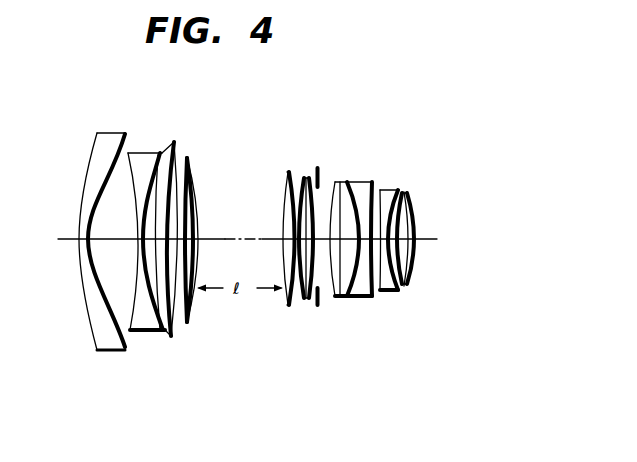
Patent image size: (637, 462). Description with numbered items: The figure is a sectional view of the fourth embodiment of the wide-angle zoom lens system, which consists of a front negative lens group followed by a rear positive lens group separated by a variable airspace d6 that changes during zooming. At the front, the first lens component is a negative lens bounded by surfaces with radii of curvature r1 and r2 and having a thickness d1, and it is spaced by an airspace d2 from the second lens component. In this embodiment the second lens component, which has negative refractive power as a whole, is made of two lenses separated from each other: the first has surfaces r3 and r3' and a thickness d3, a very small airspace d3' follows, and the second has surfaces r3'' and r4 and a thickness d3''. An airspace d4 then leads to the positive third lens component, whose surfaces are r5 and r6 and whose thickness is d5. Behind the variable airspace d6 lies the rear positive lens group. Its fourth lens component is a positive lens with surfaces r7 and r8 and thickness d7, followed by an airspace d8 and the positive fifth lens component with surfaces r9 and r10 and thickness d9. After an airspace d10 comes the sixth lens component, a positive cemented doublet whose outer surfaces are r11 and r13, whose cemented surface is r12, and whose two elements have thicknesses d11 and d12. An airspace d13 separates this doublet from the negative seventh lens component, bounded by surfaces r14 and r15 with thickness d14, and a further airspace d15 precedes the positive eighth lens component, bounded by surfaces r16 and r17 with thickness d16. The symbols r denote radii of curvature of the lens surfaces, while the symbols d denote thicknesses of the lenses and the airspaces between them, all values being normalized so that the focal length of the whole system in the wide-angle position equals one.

The thickness of first lens d1 is at (80, 234).
The airspace between first and second lens components d2 is at (110, 237).
The thickness of first lens of second lens component d3 is at (134, 210).
The very small airspace within second lens component d3' is at (158, 210).
The thickness of second lens of second lens component d3'' is at (183, 210).
The airspace between second and third lens components d4 is at (196, 192).
The thickness of third lens d5 is at (197, 213).
The variable airspace between front and rear lens groups d6 is at (218, 238).
The thickness of fourth lens d7 is at (283, 238).
The airspace between fourth and fifth lens components d8 is at (295, 230).
The thickness of fifth lens d9 is at (303, 180).
The airspace between fifth and sixth lens components d10 is at (321, 182).
The thickness of first element of sixth lens component d11 is at (346, 182).
The thickness of second element of sixth lens component d12 is at (370, 183).
The airspace between sixth and seventh lens components d13 is at (381, 190).
The thickness of seventh lens d14 is at (408, 192).
The airspace between seventh and eighth lens components d15 is at (413, 200).
The thickness of eighth lens d16 is at (428, 215).
The radius of curvature of first lens surface r1 is at (90, 330).
The radius of curvature of second lens surface r2 is at (120, 333).
The radius of curvature of third lens surface r3 is at (129, 290).
The radius of curvature of rear surface of first lens of second lens component r3' is at (153, 275).
The radius of curvature of front surface of second lens of second lens component r3'' is at (176, 285).
The radius of curvature of fourth lens surface r4 is at (183, 340).
The radius of curvature of fifth lens surface r5 is at (192, 320).
The radius of curvature of sixth lens surface r6 is at (202, 310).
The radius of curvature of seventh lens surface r7 is at (287, 308).
The radius of curvature of eighth lens surface r8 is at (300, 298).
The radius of curvature of ninth lens surface r9 is at (307, 298).
The radius of curvature of tenth lens surface r10 is at (322, 300).
The radius of curvature of eleventh lens surface r11 is at (358, 297).
The radius of curvature of cemented surface of sixth lens component r12 is at (362, 300).
The radius of curvature of thirteenth lens surface r13 is at (387, 297).
The radius of curvature of fourteenth lens surface r14 is at (405, 290).
The radius of curvature of fifteenth lens surface r15 is at (412, 285).
The radius of curvature of sixteenth lens surface r16 is at (418, 275).
The radius of curvature of seventeenth lens surface r17 is at (420, 250).